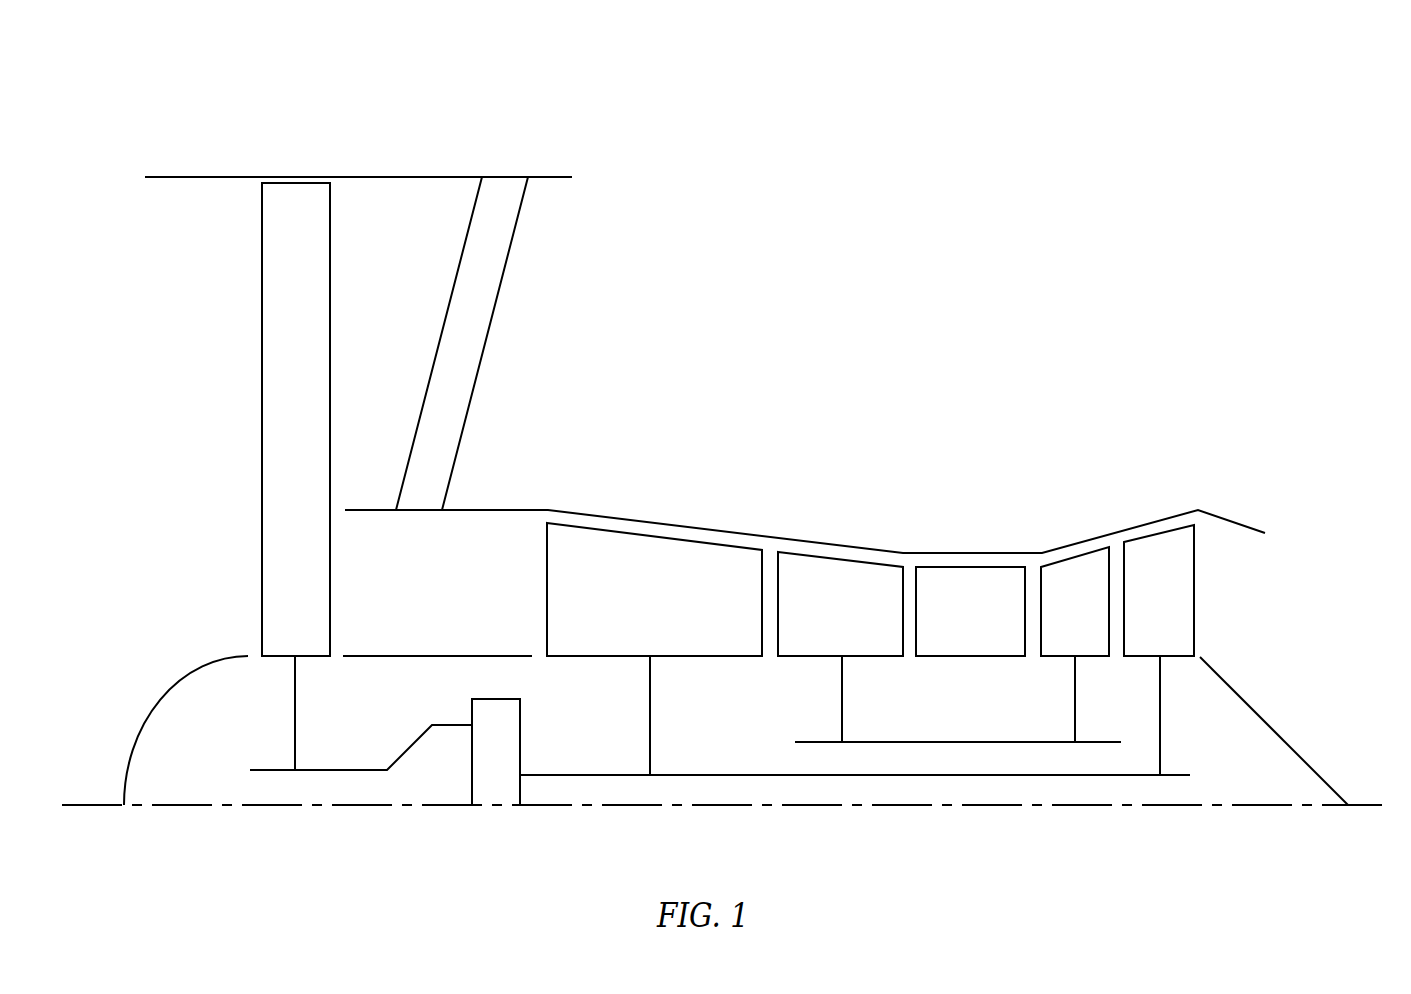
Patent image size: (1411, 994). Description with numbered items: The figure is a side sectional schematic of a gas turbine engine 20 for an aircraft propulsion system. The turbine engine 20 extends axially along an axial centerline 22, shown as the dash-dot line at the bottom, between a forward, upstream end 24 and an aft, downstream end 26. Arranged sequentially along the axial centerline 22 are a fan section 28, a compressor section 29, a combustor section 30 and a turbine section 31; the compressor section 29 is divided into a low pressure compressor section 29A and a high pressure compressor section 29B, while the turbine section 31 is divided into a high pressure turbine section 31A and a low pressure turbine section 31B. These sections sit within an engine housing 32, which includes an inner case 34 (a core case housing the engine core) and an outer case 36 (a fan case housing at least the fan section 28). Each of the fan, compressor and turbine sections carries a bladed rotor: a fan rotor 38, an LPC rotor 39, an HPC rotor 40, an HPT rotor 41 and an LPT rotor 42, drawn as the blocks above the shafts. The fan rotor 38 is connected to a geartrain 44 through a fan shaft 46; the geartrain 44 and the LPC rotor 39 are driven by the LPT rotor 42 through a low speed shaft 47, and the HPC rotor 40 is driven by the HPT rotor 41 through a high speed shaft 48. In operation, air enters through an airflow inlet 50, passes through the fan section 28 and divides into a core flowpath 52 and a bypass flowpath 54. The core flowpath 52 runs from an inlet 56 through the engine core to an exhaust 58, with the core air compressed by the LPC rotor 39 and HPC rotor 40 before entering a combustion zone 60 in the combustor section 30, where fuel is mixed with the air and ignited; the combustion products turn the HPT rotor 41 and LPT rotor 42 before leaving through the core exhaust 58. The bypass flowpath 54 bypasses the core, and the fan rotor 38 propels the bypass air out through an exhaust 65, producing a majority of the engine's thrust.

The gas turbine engine 20 is at (88, 91).
The axial centerline 22 is at (77, 808).
The forward, upstream end 24 is at (145, 177).
The aft, downstream end 26 is at (1350, 805).
The fan section 28 is at (368, 157).
The compressor section 29 is at (547, 360).
The low pressure compressor (LPC) section 29A is at (762, 446).
The high pressure compressor (HPC) section 29B is at (903, 446).
The combustor section 30 is at (1025, 446).
The turbine section 31 is at (1042, 360).
The high pressure turbine (HPT) section 31A is at (1110, 446).
The low pressure turbine (LPT) section 31B is at (1192, 446).
The engine housing 32 is at (684, 170).
The inner case 34 is at (505, 484).
The outer case 36 is at (464, 168).
The fan rotor 38 is at (295, 714).
The LPC rotor 39 is at (650, 713).
The HPC rotor 40 is at (842, 690).
The HPT rotor 41 is at (1075, 688).
The LPT rotor 42 is at (1160, 716).
The geartrain 44 is at (482, 767).
The fan shaft 46 is at (340, 771).
The low speed shaft 47 is at (1102, 776).
The high speed shaft 48 is at (972, 742).
The airflow inlet 50 is at (132, 370).
The core flowpath 52 is at (405, 605).
The bypass flowpath 54 is at (377, 330).
The inlet into the core flowpath 56 is at (350, 587).
The exhaust from the core flowpath 58 is at (1262, 612).
The combustion zone 60 is at (965, 625).
The exhaust from the bypass flowpath 65 is at (566, 253).